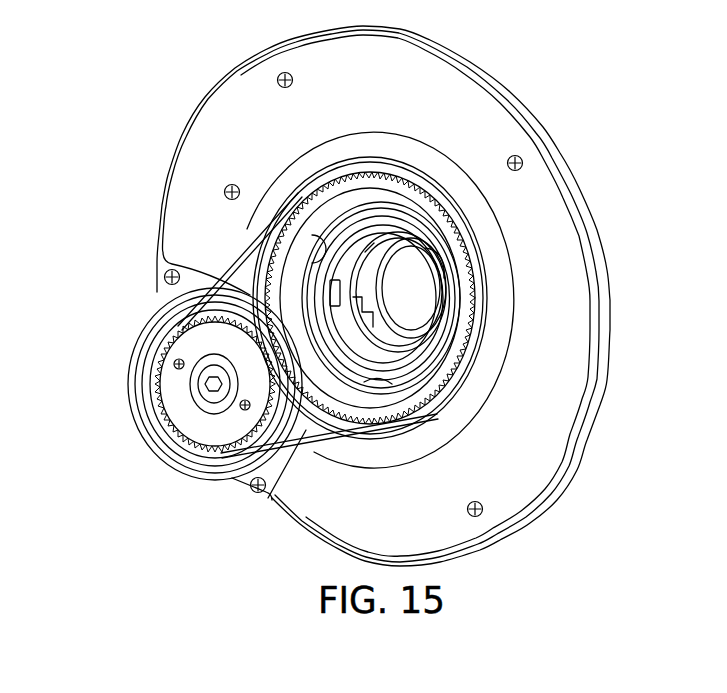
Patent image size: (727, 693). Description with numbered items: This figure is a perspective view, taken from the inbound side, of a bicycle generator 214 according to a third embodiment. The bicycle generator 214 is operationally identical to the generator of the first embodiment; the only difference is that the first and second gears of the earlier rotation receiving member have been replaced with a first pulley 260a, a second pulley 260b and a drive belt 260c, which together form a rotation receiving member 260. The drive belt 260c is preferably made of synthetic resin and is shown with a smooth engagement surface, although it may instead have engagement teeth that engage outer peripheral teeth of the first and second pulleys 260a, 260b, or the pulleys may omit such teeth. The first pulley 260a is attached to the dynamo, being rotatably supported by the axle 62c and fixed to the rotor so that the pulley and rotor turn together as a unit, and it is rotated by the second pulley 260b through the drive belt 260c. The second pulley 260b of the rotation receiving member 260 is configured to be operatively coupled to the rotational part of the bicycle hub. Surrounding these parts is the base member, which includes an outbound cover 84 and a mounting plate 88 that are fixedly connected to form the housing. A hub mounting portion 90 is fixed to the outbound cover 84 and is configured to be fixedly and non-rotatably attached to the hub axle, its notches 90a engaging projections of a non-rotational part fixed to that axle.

The bicycle generator 214 is at (148, 103).
The rotation receiving member 260 is at (76, 220).
The first pulley 260a is at (198, 337).
The second pulley 260b is at (268, 291).
The drive belt 260c is at (217, 287).
The axle 62c is at (210, 397).
The hub mounting portion 90 is at (392, 279).
The notches 90a is at (363, 318).
The outbound cover 84 is at (600, 383).
The mounting plate 88 is at (570, 444).